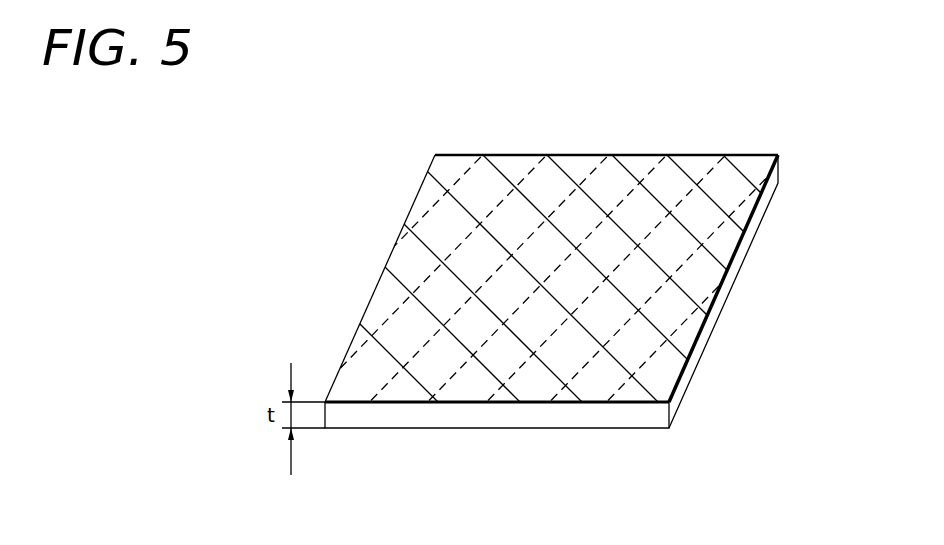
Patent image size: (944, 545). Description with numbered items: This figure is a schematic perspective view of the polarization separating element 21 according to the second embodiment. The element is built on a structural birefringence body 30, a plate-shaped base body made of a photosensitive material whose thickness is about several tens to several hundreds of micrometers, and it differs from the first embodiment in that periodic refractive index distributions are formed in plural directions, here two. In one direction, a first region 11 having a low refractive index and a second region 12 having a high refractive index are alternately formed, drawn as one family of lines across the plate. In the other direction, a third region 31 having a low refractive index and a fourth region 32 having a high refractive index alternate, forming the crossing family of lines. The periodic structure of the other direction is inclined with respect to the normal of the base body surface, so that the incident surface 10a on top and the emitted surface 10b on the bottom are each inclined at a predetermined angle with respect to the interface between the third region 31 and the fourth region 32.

The polarization separating element 21 is at (311, 131).
The incident surface 10a is at (455, 170).
The emitted surface 10b is at (395, 428).
The first region 11 is at (504, 172).
The second region 12 is at (529, 162).
The structural birefringence body 30 is at (712, 141).
The third region 31 is at (428, 225).
The fourth region 32 is at (447, 232).